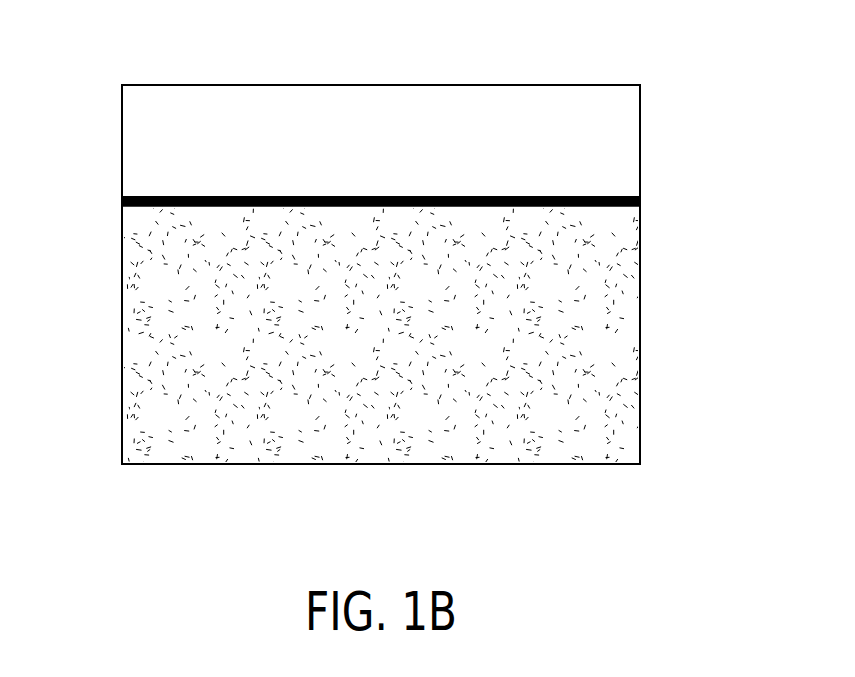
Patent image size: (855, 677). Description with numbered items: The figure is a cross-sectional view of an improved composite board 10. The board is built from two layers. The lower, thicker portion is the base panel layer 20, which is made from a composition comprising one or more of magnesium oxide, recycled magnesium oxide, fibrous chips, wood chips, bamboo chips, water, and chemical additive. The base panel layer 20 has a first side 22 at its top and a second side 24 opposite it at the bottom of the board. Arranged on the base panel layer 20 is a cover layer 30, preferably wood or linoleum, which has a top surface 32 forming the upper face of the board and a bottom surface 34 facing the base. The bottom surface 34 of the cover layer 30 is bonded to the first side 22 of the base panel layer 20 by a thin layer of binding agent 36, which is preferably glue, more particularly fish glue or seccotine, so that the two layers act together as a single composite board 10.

The composite board 10 is at (695, 455).
The base panel layer 20 is at (612, 283).
The first side 22 is at (640, 197).
The second side 24 is at (605, 466).
The cover layer 30 is at (122, 135).
The top surface 32 is at (163, 85).
The bottom surface 34 is at (122, 201).
The binding agent 36 is at (640, 204).